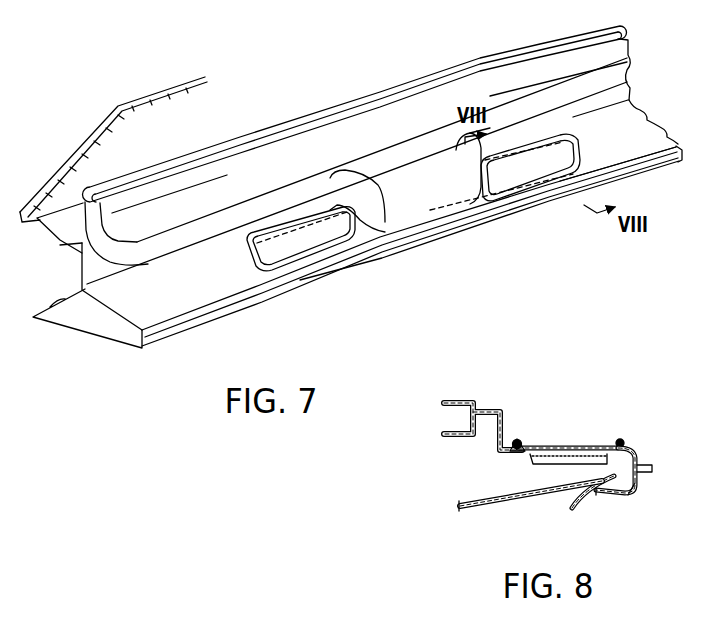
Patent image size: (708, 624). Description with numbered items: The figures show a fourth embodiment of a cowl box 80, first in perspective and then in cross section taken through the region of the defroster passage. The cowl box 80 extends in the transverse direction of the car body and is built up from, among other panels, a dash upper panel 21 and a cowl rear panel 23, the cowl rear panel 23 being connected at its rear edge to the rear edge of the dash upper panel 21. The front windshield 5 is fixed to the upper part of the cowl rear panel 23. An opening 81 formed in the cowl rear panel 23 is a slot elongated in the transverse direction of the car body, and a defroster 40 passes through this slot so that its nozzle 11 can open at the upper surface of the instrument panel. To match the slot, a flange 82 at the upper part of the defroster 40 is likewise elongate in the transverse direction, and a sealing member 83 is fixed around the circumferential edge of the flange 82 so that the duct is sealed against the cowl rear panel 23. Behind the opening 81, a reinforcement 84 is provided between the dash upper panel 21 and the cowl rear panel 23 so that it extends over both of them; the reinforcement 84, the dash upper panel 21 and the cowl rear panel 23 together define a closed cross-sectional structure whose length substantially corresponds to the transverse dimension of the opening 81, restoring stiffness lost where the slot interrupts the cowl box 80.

In FIG. 7, the front windshield 5 is at (134, 101).
In FIG. 7, the nozzle 11 is at (300, 108).
In FIG. 8, the dash upper panel 21 is at (624, 488).
In FIG. 7, the cowl rear panel 23 is at (645, 125).
In FIG. 8, the cowl rear panel 23 is at (640, 452).
In FIG. 7, the defroster 40 is at (440, 186).
In FIG. 7, the cowl box 80 is at (257, 315).
In FIG. 8, the cowl box 80 is at (528, 502).
In FIG. 7, the opening 81 is at (338, 236).
In FIG. 8, the opening 81 is at (560, 464).
In FIG. 7, the flange 82 is at (528, 178).
In FIG. 8, the flange 82 is at (573, 442).
In FIG. 7, the sealing member 83 is at (640, 170).
In FIG. 8, the sealing member 83 is at (514, 440).
In FIG. 8, the reinforcement 84 is at (598, 482).